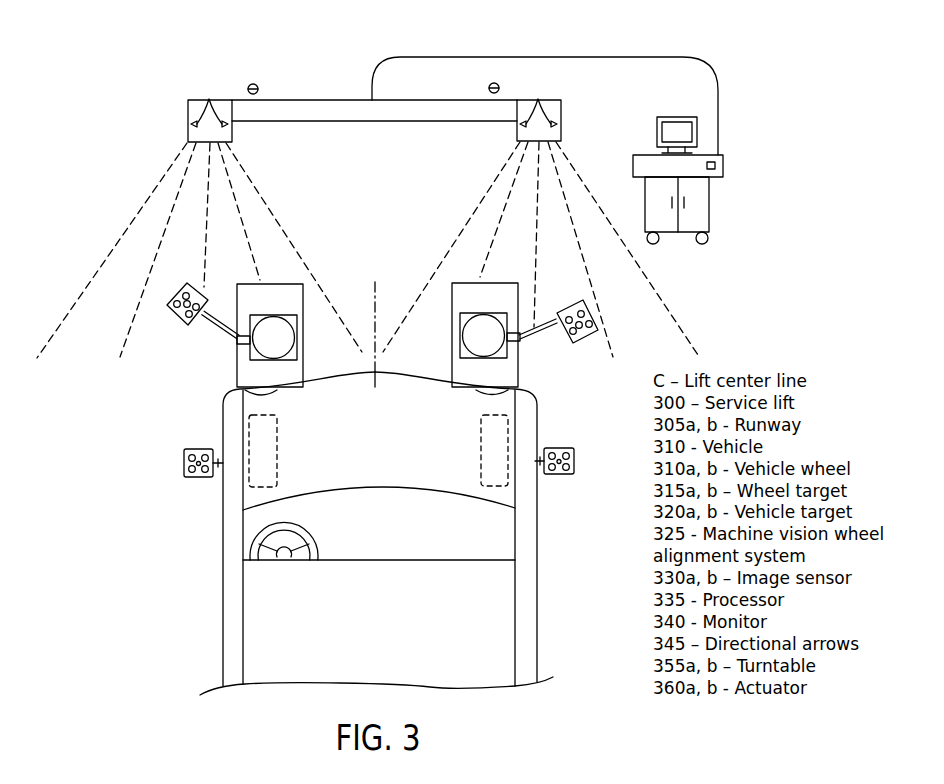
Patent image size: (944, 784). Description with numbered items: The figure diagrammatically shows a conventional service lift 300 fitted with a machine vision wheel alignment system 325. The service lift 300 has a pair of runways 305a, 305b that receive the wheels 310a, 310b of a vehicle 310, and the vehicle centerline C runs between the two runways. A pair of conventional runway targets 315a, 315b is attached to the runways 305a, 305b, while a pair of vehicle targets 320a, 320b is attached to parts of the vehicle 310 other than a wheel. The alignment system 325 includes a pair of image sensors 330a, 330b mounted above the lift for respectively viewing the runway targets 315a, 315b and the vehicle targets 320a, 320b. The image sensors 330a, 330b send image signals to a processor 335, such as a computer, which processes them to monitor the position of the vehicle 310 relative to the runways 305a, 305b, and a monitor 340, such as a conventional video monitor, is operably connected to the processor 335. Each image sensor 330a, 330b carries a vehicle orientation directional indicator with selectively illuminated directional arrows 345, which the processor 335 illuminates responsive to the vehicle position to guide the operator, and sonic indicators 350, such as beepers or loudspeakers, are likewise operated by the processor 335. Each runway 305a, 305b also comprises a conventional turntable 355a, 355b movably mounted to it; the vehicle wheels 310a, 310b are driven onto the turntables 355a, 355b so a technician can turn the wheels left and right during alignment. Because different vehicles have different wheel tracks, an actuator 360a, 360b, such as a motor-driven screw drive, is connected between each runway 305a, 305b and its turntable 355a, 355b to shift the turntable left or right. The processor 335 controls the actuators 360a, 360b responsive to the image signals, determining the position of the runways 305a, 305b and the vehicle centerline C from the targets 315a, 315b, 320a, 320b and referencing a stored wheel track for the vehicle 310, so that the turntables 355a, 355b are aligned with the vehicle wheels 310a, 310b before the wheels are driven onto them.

The vehicle centerline C is at (377, 284).
The service lift 300 is at (587, 546).
The runway 305a is at (245, 365).
The runway 305b is at (520, 366).
The vehicle 310 is at (262, 609).
The vehicle wheel 310a is at (243, 477).
The vehicle wheel 310b is at (510, 462).
The runway target 315a is at (168, 313).
The runway target 315b is at (592, 342).
The vehicle target 320a is at (184, 456).
The vehicle target 320b is at (576, 452).
The machine vision wheel alignment system 325 is at (245, 63).
The image sensor 330a is at (195, 110).
The image sensor 330b is at (558, 102).
The processor 335 is at (703, 202).
The monitor 340 is at (666, 117).
The directional arrows 345 is at (209, 99).
The sonic indicator 350 is at (259, 87).
The turntable 355a is at (303, 352).
The turntable 355b is at (459, 352).
The actuator 360a is at (248, 338).
The actuator 360b is at (513, 336).